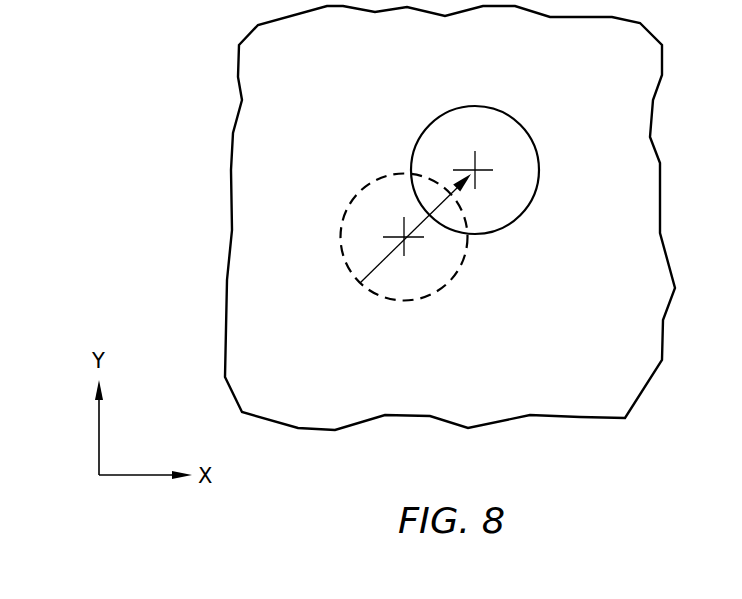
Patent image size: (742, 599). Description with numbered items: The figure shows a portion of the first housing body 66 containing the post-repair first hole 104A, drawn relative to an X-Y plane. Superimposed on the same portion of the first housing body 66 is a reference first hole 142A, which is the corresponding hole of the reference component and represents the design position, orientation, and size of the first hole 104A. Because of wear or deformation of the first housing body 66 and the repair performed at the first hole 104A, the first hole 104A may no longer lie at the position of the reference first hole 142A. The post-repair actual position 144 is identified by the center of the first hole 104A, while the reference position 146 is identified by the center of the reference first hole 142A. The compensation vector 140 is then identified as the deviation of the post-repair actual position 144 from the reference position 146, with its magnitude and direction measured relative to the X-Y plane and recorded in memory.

The first housing body 66 is at (623, 112).
The first hole 104A is at (518, 199).
The post-repair actual position 144 is at (485, 167).
The reference first hole 142A is at (428, 285).
The reference position 146 is at (362, 282).
The compensation vector 140 is at (437, 203).